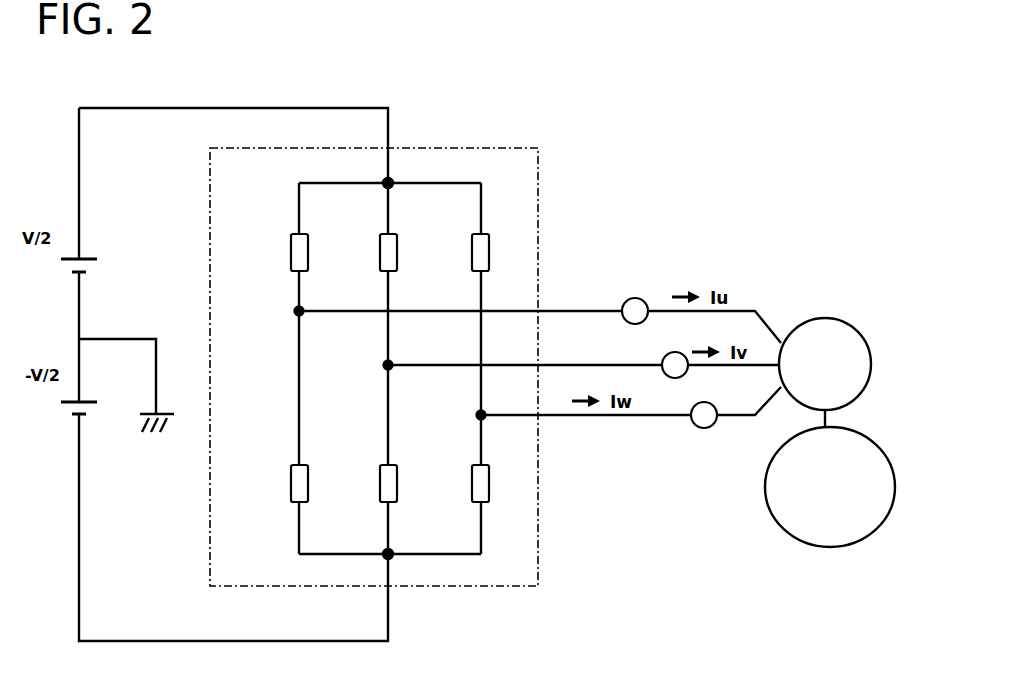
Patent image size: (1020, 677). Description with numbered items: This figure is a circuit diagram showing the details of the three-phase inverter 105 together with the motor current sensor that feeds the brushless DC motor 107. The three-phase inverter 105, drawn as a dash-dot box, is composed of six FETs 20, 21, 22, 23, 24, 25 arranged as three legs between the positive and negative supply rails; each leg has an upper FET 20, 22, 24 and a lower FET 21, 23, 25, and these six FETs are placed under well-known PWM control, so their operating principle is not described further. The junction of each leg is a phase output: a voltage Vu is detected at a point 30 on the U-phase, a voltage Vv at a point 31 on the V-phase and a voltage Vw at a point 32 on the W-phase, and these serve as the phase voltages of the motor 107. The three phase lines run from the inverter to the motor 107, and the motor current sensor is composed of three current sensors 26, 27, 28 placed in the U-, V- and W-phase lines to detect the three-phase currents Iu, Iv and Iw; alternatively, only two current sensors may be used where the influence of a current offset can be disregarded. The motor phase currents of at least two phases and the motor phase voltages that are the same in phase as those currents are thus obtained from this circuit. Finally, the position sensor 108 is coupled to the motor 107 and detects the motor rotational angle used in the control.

The FET 20 is at (298, 253).
The FET 21 is at (296, 484).
The FET 22 is at (389, 253).
The FET 23 is at (389, 484).
The FET 24 is at (479, 253).
The FET 25 is at (481, 490).
The current sensor 26 is at (630, 303).
The current sensor 27 is at (668, 360).
The current sensor 28 is at (699, 422).
The point on the U-phase 30 is at (296, 307).
The point on the V-phase 31 is at (387, 360).
The point on the W-phase 32 is at (478, 410).
The three-phase inverter 105 is at (458, 165).
The motor 107 is at (845, 345).
The position sensor 108 is at (887, 462).